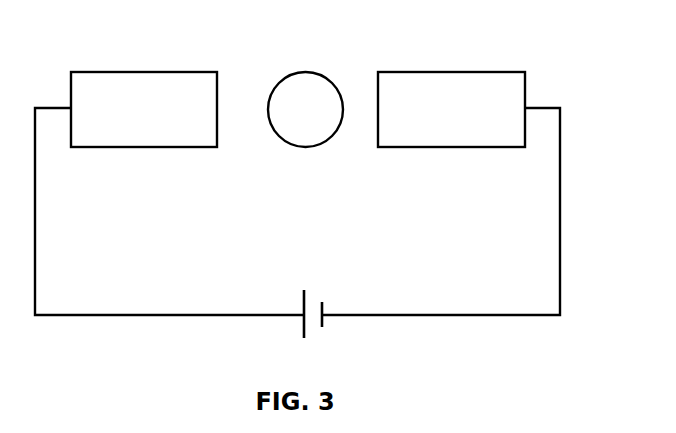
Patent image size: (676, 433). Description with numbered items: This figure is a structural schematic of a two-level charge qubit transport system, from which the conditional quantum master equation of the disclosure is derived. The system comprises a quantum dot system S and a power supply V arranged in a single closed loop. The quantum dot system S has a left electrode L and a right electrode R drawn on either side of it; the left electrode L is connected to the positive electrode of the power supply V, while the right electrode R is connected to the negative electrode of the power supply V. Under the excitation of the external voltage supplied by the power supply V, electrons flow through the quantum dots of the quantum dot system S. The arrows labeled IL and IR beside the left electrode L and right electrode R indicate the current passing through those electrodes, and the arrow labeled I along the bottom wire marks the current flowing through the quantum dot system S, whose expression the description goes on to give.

The left electrode L is at (144, 109).
The quantum dot system S is at (305, 109).
The right electrode R is at (451, 109).
The power supply V is at (329, 326).
The inductor current IL is at (172, 59).
The resistor current IR is at (478, 59).
The total current I is at (253, 292).